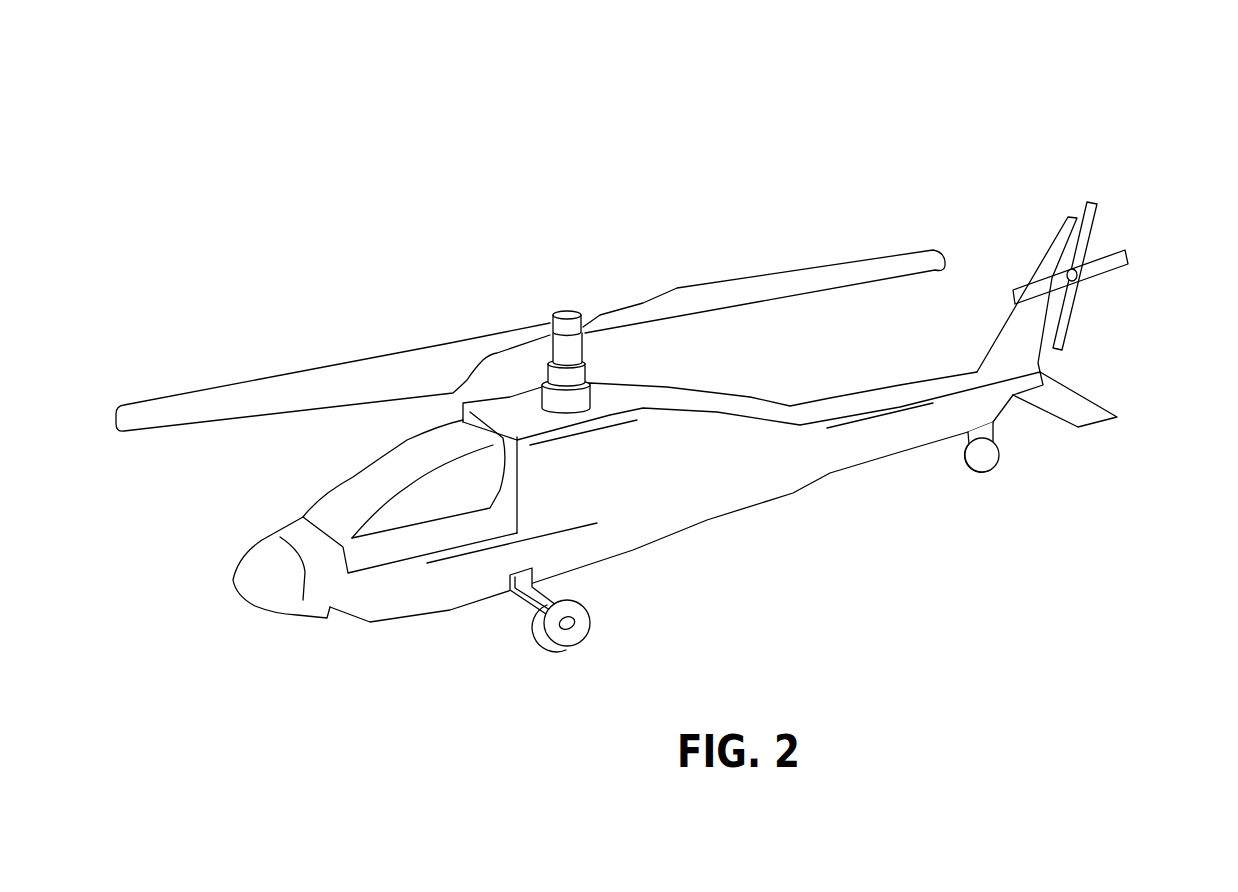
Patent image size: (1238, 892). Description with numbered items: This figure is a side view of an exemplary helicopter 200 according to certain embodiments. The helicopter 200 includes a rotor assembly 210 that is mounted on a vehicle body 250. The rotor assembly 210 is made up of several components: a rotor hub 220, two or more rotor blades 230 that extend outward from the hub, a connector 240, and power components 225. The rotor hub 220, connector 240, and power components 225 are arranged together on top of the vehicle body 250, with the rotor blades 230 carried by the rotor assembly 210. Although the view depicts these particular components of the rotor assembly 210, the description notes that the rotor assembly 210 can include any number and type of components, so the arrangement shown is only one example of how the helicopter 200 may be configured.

The helicopter 200 is at (662, 386).
The rotor assembly 210 is at (530, 369).
The rotor hub 220 is at (565, 313).
The power components 225 is at (577, 400).
The rotor blades 230 is at (775, 280).
The connector 240 is at (575, 353).
The vehicle body 250 is at (780, 478).